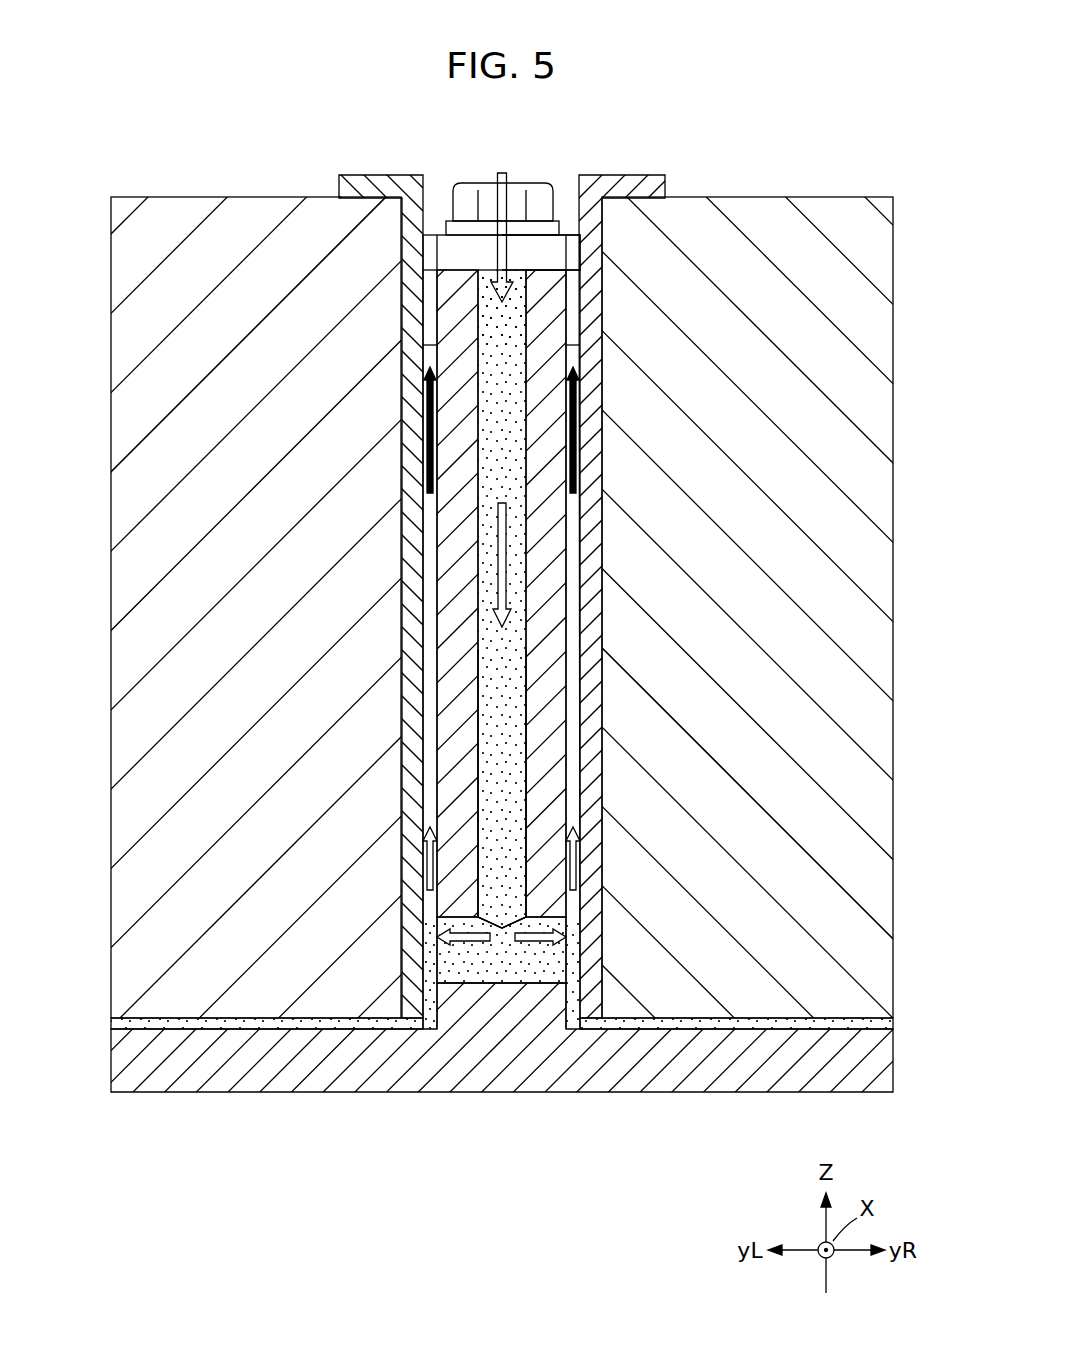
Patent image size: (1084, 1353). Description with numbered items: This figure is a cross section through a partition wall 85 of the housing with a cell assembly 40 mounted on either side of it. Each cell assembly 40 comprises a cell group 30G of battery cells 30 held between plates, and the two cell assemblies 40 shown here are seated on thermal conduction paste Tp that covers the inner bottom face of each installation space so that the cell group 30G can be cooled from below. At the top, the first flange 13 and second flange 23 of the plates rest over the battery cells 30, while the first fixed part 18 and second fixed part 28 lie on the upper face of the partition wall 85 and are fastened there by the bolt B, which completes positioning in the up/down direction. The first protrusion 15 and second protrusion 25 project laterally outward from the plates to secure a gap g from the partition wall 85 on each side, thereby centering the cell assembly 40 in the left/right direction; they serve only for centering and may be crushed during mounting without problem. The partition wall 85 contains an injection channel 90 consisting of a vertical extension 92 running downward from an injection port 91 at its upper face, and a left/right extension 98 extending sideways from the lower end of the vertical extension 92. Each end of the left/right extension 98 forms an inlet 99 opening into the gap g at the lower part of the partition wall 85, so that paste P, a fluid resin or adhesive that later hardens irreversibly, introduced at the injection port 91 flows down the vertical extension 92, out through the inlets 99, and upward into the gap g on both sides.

The first flange 13 is at (370, 175).
The first fixed part 18 is at (427, 243).
The bolt B is at (518, 181).
The second fixed part 28 is at (568, 250).
The second flange 23 is at (622, 178).
The injection port 91 is at (517, 279).
The first protrusion 15 is at (445, 328).
The second protrusion 25 is at (557, 330).
The cell assembly 40 is at (125, 424).
The cell group 30G is at (125, 490).
The battery cell 30 is at (125, 560).
The injection channel 90 is at (505, 415).
The partition wall 85 is at (455, 565).
The gap g is at (432, 640).
The vertical extension 92 is at (502, 752).
The paste P is at (495, 877).
The inlet 99 is at (455, 975).
The left/right extension 98 is at (508, 968).
The thermal conduction paste Tp is at (283, 1021).